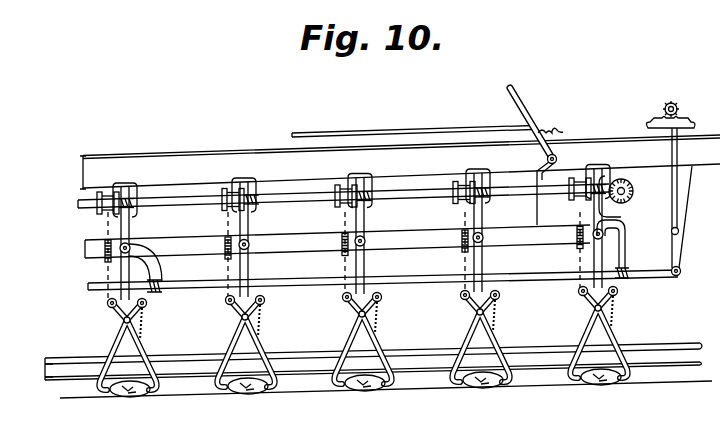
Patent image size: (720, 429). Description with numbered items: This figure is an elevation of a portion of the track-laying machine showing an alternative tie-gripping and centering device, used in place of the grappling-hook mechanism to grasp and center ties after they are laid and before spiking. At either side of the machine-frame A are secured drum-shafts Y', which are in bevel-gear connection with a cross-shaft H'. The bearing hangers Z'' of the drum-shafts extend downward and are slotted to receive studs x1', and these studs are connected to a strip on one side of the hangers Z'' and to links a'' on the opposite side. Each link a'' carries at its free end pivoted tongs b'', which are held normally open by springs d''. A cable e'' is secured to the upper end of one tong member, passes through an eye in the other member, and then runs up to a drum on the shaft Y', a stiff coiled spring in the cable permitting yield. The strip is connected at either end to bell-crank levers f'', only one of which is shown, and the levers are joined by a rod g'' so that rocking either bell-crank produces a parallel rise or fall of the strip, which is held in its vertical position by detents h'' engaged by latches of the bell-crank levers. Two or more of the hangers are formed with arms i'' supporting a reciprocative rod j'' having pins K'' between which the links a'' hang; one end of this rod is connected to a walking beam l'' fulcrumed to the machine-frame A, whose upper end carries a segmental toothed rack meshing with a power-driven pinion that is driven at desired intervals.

The machine-frame A is at (400, 162).
The rod g'' is at (412, 117).
The bell-crank lever f'' is at (533, 156).
The detent h'' is at (562, 124).
The cross-shaft H' is at (620, 165).
The drum-shaft Y' is at (343, 182).
The bearing hanger Z'' is at (351, 209).
The cable e'' is at (344, 256).
The stud x1' is at (337, 246).
The link a'' is at (210, 277).
The arm i'' is at (626, 249).
The pin K'' is at (361, 288).
The walking beam l'' is at (668, 184).
The reciprocative rod j'' is at (666, 288).
The tongs b'' is at (363, 339).
The spring d'' is at (454, 315).